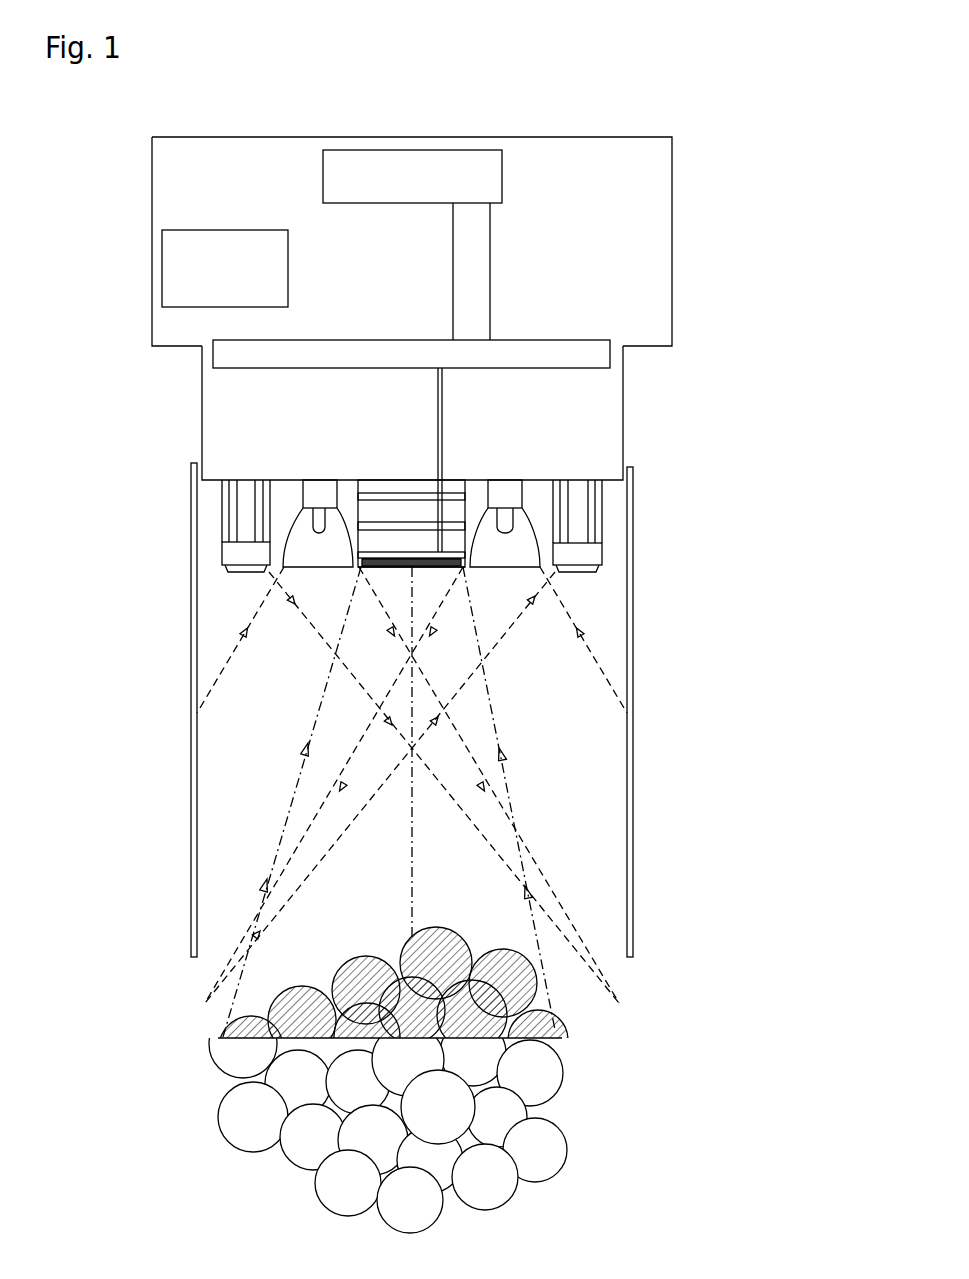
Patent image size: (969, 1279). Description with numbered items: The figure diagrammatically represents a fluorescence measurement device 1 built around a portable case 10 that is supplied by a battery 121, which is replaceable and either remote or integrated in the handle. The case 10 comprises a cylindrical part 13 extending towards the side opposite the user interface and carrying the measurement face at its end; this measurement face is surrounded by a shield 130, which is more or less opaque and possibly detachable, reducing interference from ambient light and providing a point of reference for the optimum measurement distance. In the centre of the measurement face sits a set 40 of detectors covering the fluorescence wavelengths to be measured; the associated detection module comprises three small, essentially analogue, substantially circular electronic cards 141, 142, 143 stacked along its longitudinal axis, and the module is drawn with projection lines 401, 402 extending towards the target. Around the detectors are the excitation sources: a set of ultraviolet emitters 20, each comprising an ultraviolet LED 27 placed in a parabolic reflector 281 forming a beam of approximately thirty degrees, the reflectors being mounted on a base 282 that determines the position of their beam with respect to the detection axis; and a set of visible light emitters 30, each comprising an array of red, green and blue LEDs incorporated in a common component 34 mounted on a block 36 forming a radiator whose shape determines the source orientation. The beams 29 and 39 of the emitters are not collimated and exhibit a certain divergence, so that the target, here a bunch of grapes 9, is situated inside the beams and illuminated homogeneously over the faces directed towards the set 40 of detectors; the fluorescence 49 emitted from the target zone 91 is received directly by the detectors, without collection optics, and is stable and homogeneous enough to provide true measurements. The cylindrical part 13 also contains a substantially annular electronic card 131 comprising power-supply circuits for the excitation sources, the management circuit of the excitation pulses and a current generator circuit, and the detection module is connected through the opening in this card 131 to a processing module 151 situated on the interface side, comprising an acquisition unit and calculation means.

The object recognition apparatus 1 is at (472, 88).
The bunch of grapes 9 is at (603, 1108).
The portable case 10 is at (152, 235).
The cylindrical part 13 is at (202, 440).
The set of ultraviolet emitters 20 is at (331, 465).
The ultraviolet LED 27 is at (507, 527).
The beam 29 is at (447, 596).
The set of visible light emitters 30 is at (250, 465).
The common component 34 is at (233, 575).
The block forming a radiator 36 is at (247, 510).
The beam 39 is at (318, 634).
The set of detectors 40 is at (370, 468).
The fluorescence radiation 49 is at (313, 728).
The target zone 91 is at (560, 1037).
The battery 121 is at (240, 247).
The shield 130 is at (191, 775).
The electronic card 131 is at (313, 350).
The electronic card 141 is at (370, 553).
The electronic card 142 is at (395, 525).
The electronic card 143 is at (412, 498).
The processing module 151 is at (340, 180).
The parabolic reflector 281 is at (515, 560).
The base 282 is at (513, 495).
The projection window 401 is at (421, 567).
The projection light 402 is at (434, 567).